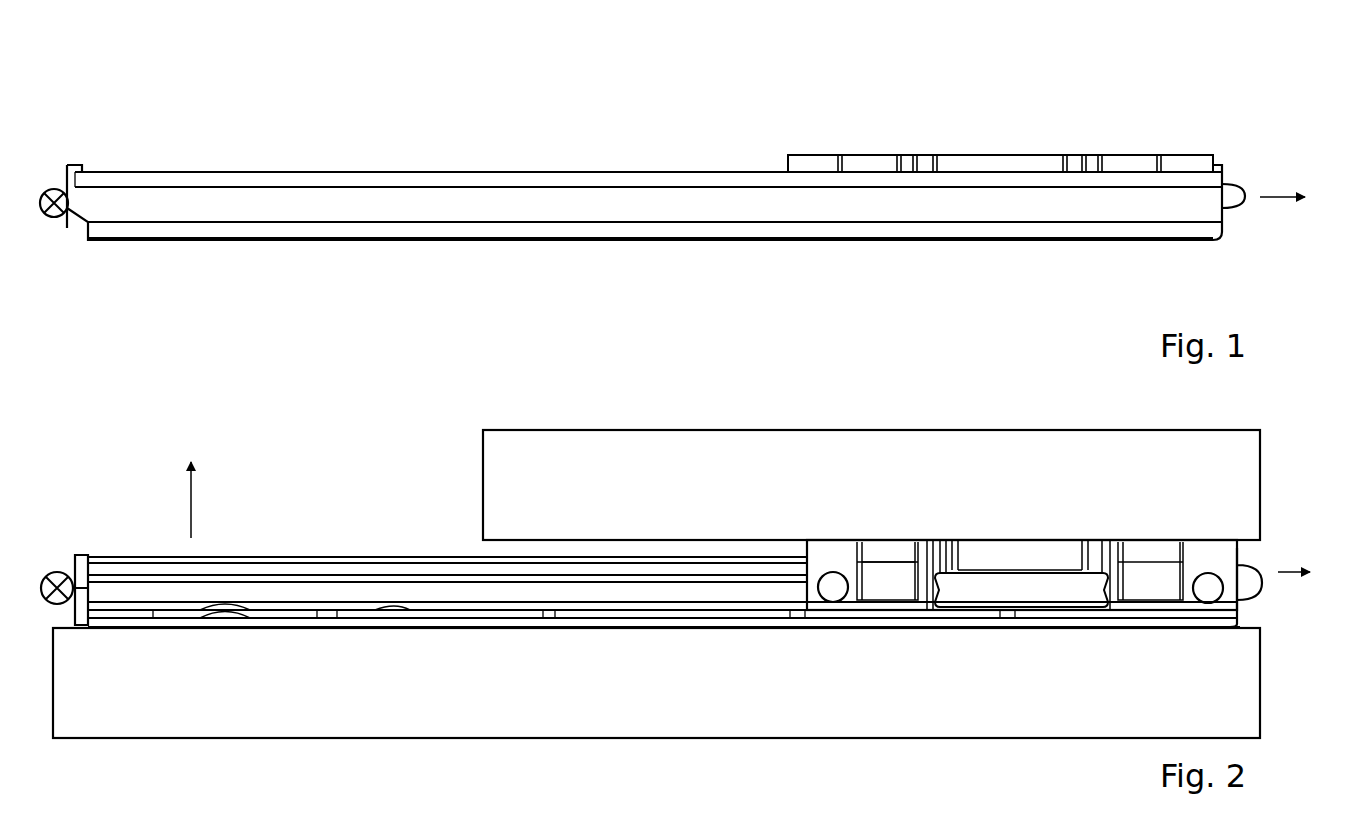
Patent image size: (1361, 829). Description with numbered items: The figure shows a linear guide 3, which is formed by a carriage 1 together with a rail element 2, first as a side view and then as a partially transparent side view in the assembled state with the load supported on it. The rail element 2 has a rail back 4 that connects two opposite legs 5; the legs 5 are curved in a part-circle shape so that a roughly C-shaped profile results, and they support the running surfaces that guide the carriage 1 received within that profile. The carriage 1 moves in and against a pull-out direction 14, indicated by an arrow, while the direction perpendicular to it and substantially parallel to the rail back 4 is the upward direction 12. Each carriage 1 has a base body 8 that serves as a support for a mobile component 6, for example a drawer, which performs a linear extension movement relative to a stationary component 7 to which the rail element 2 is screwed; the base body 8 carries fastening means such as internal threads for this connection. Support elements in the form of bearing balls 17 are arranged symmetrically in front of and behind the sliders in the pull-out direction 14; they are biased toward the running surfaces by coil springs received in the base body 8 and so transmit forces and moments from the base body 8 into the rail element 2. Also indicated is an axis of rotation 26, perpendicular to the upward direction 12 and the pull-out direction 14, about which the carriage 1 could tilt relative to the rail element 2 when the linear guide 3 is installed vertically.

In FIG. 1, the carriage 1 is at (1052, 124).
In FIG. 2, the carriage 1 is at (1005, 556).
In FIG. 1, the rail element 2 is at (543, 203).
In FIG. 2, the rail element 2 is at (305, 595).
In FIG. 1, the linear guide 3 is at (668, 118).
In FIG. 2, the linear guide 3 is at (425, 478).
In FIG. 1, the rail back 4 is at (297, 240).
In FIG. 1, the legs 5 is at (735, 212).
In FIG. 2, the legs 5 is at (148, 600).
In FIG. 2, the mobile component 6 is at (890, 460).
In FIG. 2, the stationary component 7 is at (465, 685).
In FIG. 1, the base body 8 is at (993, 158).
In FIG. 2, the base body 8 is at (893, 600).
In FIG. 1, the upward direction 12 is at (50, 228).
In FIG. 2, the upward direction 12 is at (63, 556).
In FIG. 1, the pull-out direction 14 is at (1277, 205).
In FIG. 2, the pull-out direction 14 is at (1293, 578).
In FIG. 2, the bearing balls 17 is at (832, 574).
In FIG. 2, the axis of rotation 26 is at (187, 485).